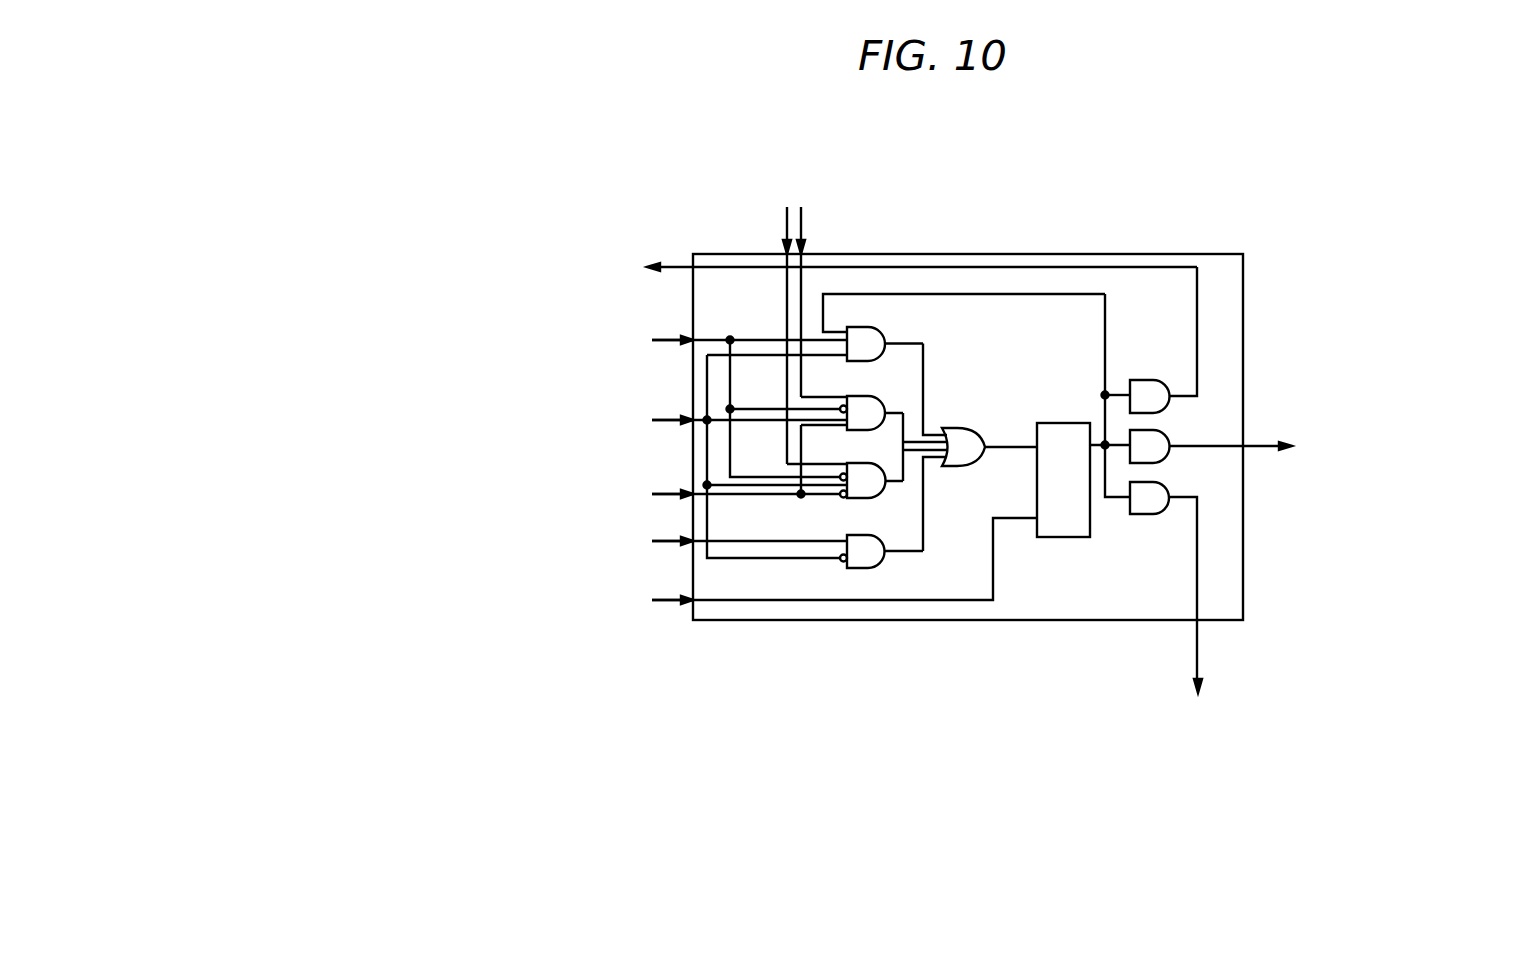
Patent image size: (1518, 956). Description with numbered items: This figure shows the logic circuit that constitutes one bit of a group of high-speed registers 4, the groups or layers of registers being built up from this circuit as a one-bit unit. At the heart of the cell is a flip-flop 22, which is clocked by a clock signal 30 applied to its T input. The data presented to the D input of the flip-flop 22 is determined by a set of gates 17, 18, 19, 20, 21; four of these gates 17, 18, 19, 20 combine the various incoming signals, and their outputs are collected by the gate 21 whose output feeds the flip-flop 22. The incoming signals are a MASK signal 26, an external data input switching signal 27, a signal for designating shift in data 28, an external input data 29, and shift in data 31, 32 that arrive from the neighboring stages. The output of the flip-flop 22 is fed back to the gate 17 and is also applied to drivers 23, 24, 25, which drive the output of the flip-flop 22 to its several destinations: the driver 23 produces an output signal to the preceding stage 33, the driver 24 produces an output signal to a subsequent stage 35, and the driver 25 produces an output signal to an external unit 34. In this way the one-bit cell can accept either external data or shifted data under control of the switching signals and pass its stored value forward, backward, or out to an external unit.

The group of high-speed registers 4 is at (1085, 254).
The gate 17 is at (883, 331).
The gate 18 is at (879, 397).
The gate 19 is at (882, 496).
The gate 20 is at (888, 566).
The gate 21 is at (976, 429).
The flip-flop 22 is at (1057, 423).
The driver 23 is at (1160, 380).
The driver 24 is at (1167, 433).
The driver 25 is at (1167, 483).
The MASK signal 26 is at (660, 338).
The external data input switching signal 27 is at (660, 417).
The signal for designating shift in data 28 is at (660, 491).
The external input data 29 is at (662, 545).
The clock signal 30 is at (662, 603).
The shift in data from the subsequent stage 31 is at (785, 216).
The shift in data from the subsequent stage 32 is at (830, 194).
The output signal to the preceding stage 33 is at (673, 263).
The output signal to an external unit 34 is at (1199, 660).
The output signal to a subsequent stage 35 is at (1258, 446).